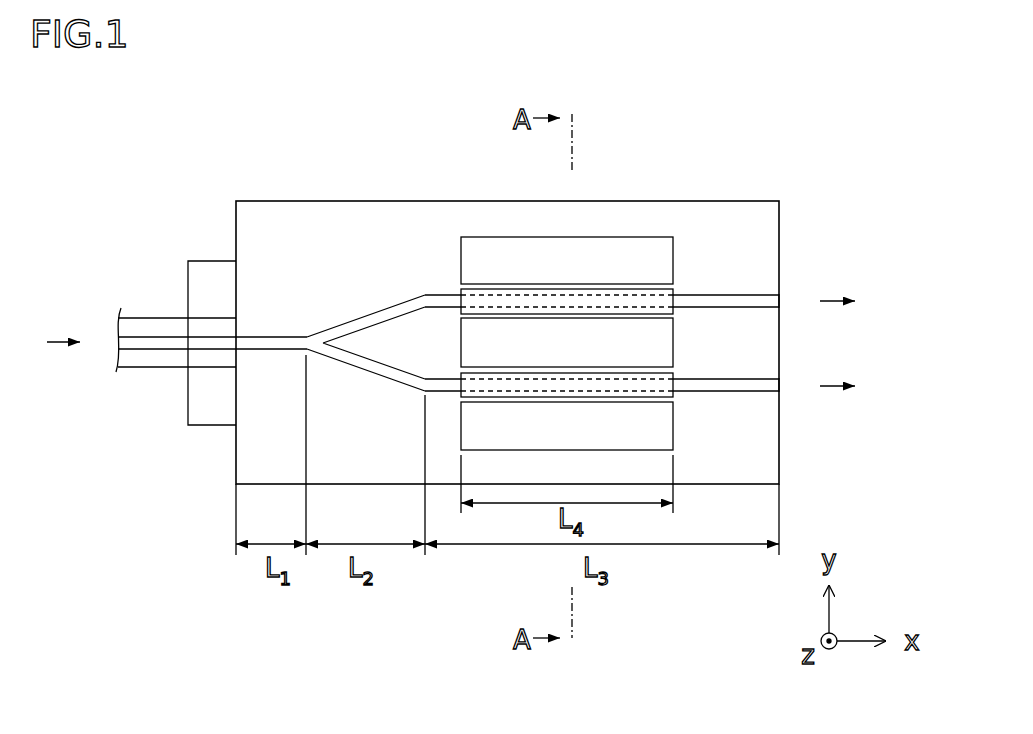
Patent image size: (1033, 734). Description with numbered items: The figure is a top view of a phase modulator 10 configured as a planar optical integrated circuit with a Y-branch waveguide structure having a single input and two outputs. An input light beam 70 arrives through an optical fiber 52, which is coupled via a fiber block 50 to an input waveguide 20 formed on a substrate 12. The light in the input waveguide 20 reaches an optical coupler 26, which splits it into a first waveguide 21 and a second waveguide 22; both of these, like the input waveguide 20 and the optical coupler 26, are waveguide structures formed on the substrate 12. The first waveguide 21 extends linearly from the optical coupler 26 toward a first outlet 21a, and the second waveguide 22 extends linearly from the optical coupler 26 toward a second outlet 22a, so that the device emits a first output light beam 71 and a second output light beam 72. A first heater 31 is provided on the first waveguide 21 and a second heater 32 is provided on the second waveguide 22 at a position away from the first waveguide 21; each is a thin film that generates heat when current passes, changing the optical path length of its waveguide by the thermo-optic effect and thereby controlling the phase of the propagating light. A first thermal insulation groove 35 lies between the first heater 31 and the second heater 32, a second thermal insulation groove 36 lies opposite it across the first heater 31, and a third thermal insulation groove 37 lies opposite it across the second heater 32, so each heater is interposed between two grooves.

The phase modulator 10 is at (690, 137).
The substrate 12 is at (286, 200).
The input waveguide 20 is at (274, 336).
The first waveguide 21 is at (751, 307).
The first outlet 21a is at (791, 292).
The second waveguide 22 is at (751, 384).
The second outlet 22a is at (791, 395).
The optical coupler 26 is at (355, 295).
The first heater 31 is at (683, 300).
The second heater 32 is at (683, 386).
The first thermal insulation groove 35 is at (672, 340).
The second thermal insulation groove 36 is at (672, 240).
The third thermal insulation groove 37 is at (672, 446).
The fiber block 50 is at (210, 260).
The optical fiber 52 is at (151, 325).
The input light beam 70 is at (67, 332).
The first output light beam 71 is at (839, 297).
The second output light beam 72 is at (840, 393).